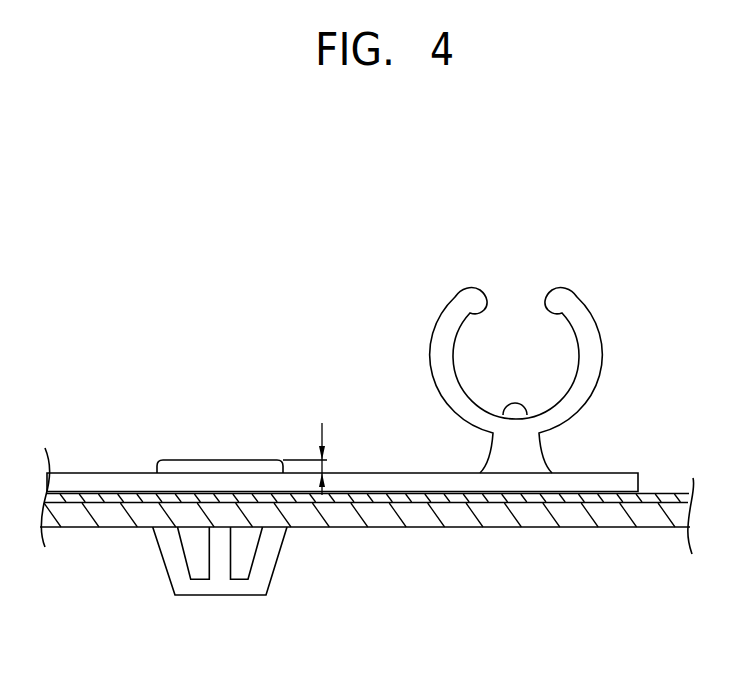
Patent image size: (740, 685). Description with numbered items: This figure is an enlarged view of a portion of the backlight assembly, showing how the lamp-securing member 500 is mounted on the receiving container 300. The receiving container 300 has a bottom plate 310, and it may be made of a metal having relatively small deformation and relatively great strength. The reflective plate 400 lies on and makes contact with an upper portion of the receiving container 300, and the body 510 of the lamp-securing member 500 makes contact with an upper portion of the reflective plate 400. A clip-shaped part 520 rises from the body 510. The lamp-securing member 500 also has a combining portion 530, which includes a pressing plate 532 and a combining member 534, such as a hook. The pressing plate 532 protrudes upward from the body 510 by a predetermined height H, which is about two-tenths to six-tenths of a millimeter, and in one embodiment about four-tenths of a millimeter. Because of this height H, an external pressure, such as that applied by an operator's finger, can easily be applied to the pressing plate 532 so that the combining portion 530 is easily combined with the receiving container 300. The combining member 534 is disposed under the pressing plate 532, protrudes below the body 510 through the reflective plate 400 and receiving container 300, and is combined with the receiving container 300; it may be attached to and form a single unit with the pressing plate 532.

The receiving container 300 is at (367, 524).
The bottom plate 310 is at (493, 517).
The reflective plate 400 is at (430, 507).
The lamp-securing member 500 is at (362, 437).
The body 510 is at (615, 483).
The clip 520 is at (587, 291).
The combining portion 530 is at (257, 511).
The pressing plate 532 is at (195, 467).
The combining member 534 is at (218, 586).
The height H is at (305, 454).